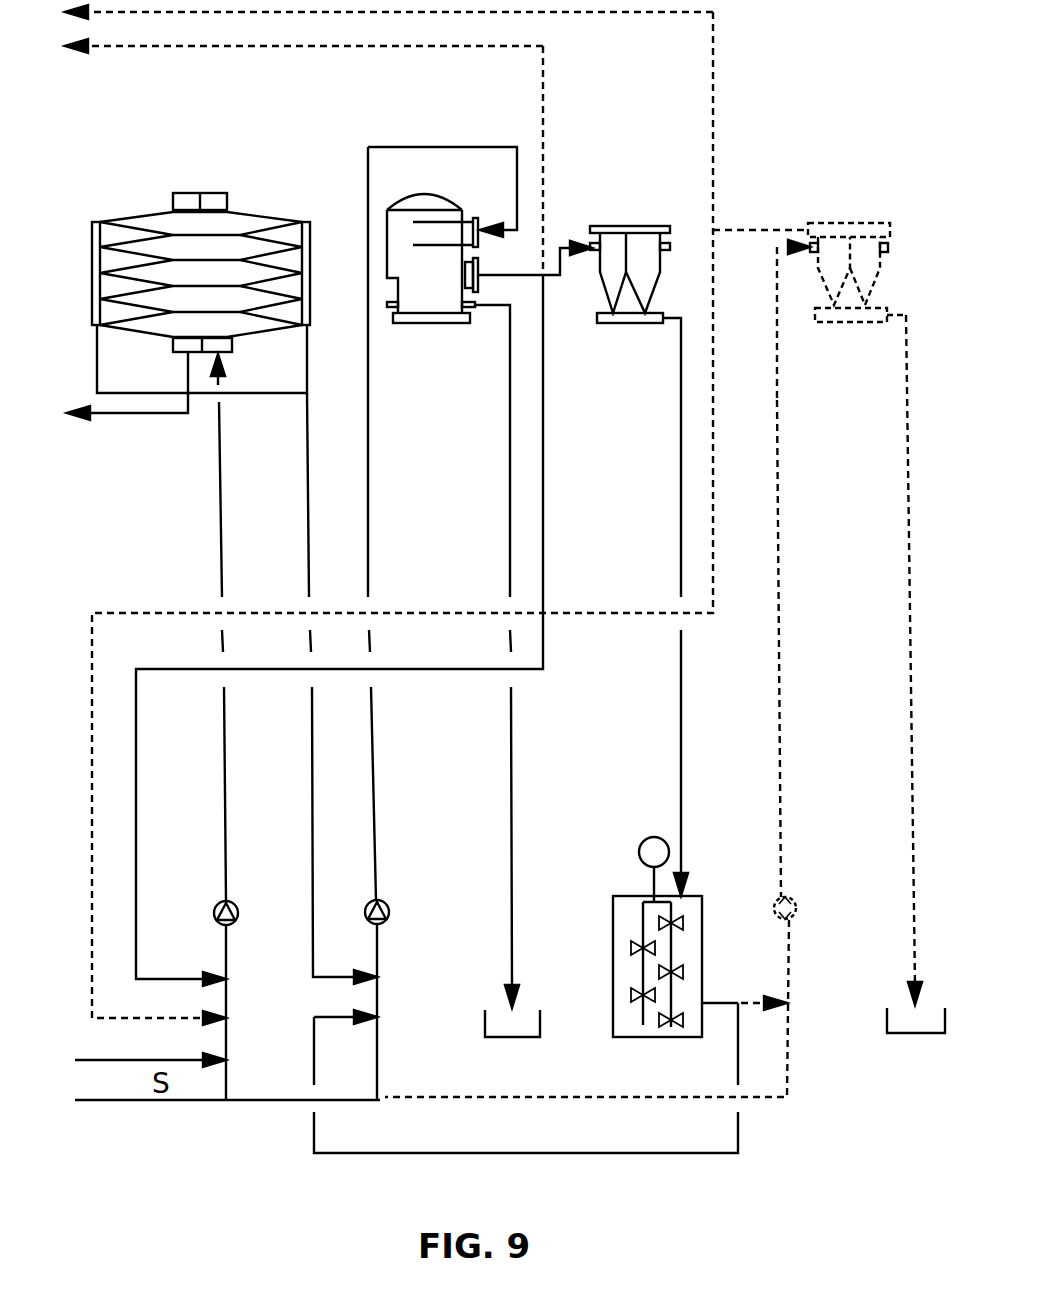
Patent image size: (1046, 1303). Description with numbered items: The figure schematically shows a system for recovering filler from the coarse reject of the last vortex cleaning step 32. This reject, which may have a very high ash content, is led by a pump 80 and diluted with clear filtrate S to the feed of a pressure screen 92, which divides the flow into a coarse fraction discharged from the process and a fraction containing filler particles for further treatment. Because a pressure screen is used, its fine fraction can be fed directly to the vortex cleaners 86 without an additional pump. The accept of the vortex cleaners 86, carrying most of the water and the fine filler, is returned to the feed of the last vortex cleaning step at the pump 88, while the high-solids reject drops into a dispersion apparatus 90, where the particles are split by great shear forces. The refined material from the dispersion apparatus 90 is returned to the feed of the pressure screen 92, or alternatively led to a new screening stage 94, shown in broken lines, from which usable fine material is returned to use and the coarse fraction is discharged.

The last vortex cleaning step 32 is at (182, 228).
The pump 80 is at (390, 917).
The vortex cleaners 86 is at (633, 250).
The pump 88 is at (213, 907).
The dispersion apparatus 90 is at (639, 852).
The pressure screen 92 is at (436, 288).
The new screening stage 94 is at (838, 257).